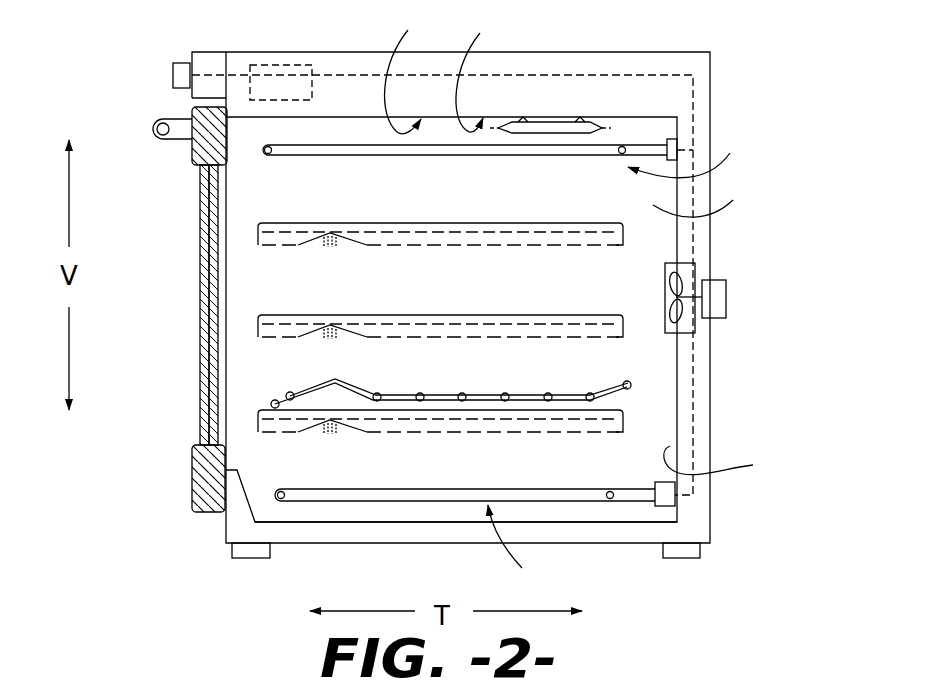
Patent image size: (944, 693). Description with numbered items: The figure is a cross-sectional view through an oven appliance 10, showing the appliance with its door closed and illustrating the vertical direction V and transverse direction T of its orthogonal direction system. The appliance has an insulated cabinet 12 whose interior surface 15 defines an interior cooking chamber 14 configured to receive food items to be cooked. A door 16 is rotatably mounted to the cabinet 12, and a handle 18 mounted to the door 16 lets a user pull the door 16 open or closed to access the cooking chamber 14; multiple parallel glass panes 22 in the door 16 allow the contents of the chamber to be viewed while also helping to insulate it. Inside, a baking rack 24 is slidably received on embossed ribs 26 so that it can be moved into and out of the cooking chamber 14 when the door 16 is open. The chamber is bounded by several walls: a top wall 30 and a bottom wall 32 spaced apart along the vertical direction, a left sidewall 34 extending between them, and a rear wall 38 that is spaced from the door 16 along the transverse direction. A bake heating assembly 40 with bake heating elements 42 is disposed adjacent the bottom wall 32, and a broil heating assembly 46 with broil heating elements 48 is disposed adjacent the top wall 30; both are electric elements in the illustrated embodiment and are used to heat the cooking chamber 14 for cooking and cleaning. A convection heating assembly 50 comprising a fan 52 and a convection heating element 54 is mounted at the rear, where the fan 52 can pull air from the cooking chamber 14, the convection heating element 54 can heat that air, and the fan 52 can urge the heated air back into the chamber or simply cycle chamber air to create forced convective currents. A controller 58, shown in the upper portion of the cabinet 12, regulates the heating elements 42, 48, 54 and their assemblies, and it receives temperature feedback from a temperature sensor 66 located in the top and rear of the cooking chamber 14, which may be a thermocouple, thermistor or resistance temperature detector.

The oven appliance 10 is at (754, 85).
The insulated cabinet 12 is at (352, 62).
The cooking chamber 14 is at (625, 275).
The interior surface 15 is at (416, 67).
The door 16 is at (207, 148).
The handle 18 is at (153, 128).
The glass panes 22 is at (200, 323).
The baking rack 24 is at (315, 395).
The embossed ribs 26 is at (612, 332).
The top wall 30 is at (487, 67).
The bottom wall 32 is at (308, 522).
The left sidewall 34 is at (711, 196).
The rear wall 38 is at (729, 460).
The bake heating assembly 40 is at (524, 549).
The bake heating elements 42 is at (580, 492).
The broil heating assembly 46 is at (698, 151).
The broil heating elements 48 is at (484, 148).
The convection heating assembly 50 is at (725, 272).
The fan 52 is at (678, 334).
The convection heating element 54 is at (715, 297).
The controller 58 is at (278, 62).
The temperature sensor 66 is at (553, 126).